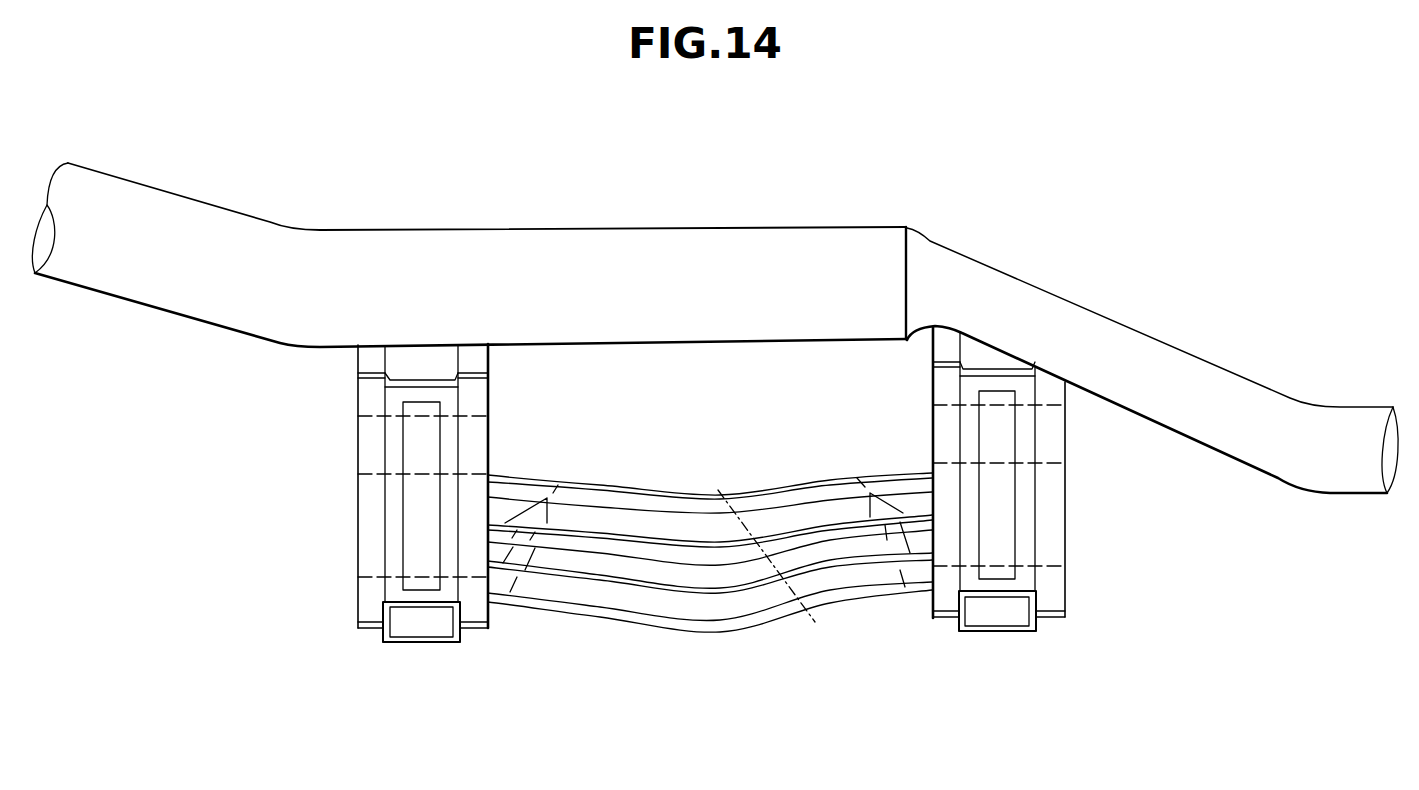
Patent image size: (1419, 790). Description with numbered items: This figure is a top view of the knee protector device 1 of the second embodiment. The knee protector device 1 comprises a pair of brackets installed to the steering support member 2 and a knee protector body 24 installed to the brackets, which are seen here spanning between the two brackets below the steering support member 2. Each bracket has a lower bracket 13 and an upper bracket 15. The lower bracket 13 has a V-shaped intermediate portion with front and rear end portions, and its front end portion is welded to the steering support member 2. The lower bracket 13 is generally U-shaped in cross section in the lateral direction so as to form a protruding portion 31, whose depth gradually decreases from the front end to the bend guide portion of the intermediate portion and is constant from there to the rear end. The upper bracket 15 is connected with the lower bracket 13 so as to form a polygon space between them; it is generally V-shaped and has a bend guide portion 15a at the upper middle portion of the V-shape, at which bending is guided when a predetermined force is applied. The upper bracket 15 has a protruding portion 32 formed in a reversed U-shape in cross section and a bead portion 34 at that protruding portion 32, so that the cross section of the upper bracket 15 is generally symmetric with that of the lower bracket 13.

The knee protector device 1 is at (1048, 463).
The steering support member 2 is at (700, 222).
The lower bracket 13 is at (428, 645).
The upper bracket 15 is at (376, 541).
The bend guide portion 15a is at (375, 476).
The knee protector body 24 is at (721, 636).
The protruding portion 31 is at (405, 363).
The protruding portion 32 is at (395, 430).
The bead portion 34 is at (417, 457).